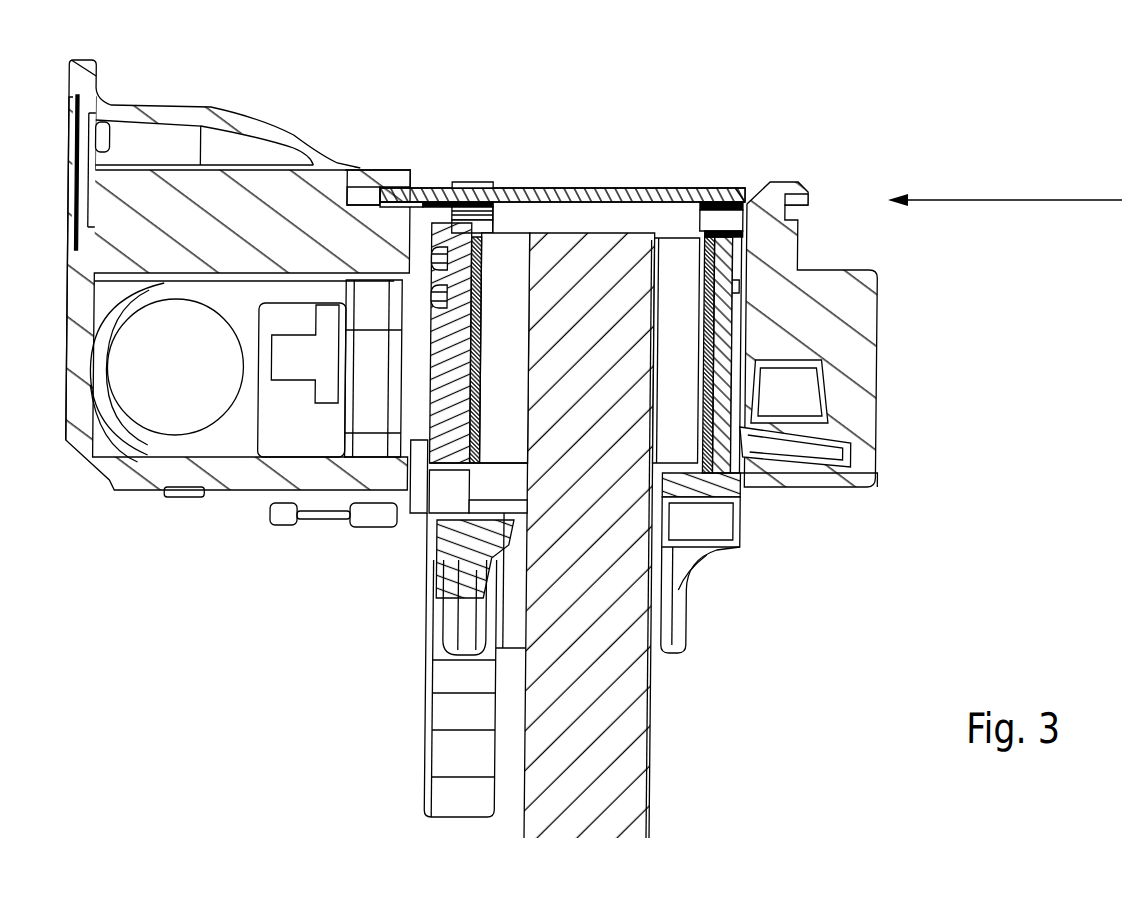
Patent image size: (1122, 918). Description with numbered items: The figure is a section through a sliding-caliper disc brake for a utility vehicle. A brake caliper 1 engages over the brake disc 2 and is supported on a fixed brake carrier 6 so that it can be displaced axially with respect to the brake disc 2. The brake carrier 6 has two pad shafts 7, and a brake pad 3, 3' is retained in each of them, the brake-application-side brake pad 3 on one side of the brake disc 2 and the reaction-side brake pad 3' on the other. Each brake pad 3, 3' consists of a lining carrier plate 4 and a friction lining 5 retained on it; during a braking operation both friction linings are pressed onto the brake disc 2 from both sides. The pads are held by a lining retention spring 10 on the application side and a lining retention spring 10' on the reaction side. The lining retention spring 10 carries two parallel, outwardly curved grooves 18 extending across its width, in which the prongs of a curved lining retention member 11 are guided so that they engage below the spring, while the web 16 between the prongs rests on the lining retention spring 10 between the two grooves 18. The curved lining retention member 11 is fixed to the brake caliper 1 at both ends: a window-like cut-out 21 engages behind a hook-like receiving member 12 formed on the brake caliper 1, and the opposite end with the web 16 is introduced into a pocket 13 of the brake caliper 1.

The brake caliper 1 is at (113, 448).
The brake disc 2 is at (630, 730).
The brake pad 3 is at (453, 419).
The brake pad 3' is at (737, 445).
The lining carrier plate 4 is at (718, 242).
The friction lining 5 is at (508, 253).
The brake carrier 6 is at (430, 640).
The pad shaft 7 is at (499, 490).
The lining retention spring 10 is at (460, 146).
The lining retention spring 10' is at (722, 157).
The curved lining retention member 11 is at (636, 172).
The hook-like receiving member 12 is at (770, 200).
The pocket 13 is at (360, 170).
The web 16 is at (557, 197).
The grooves 18 is at (455, 183).
The window-like cut-out 21 is at (733, 200).